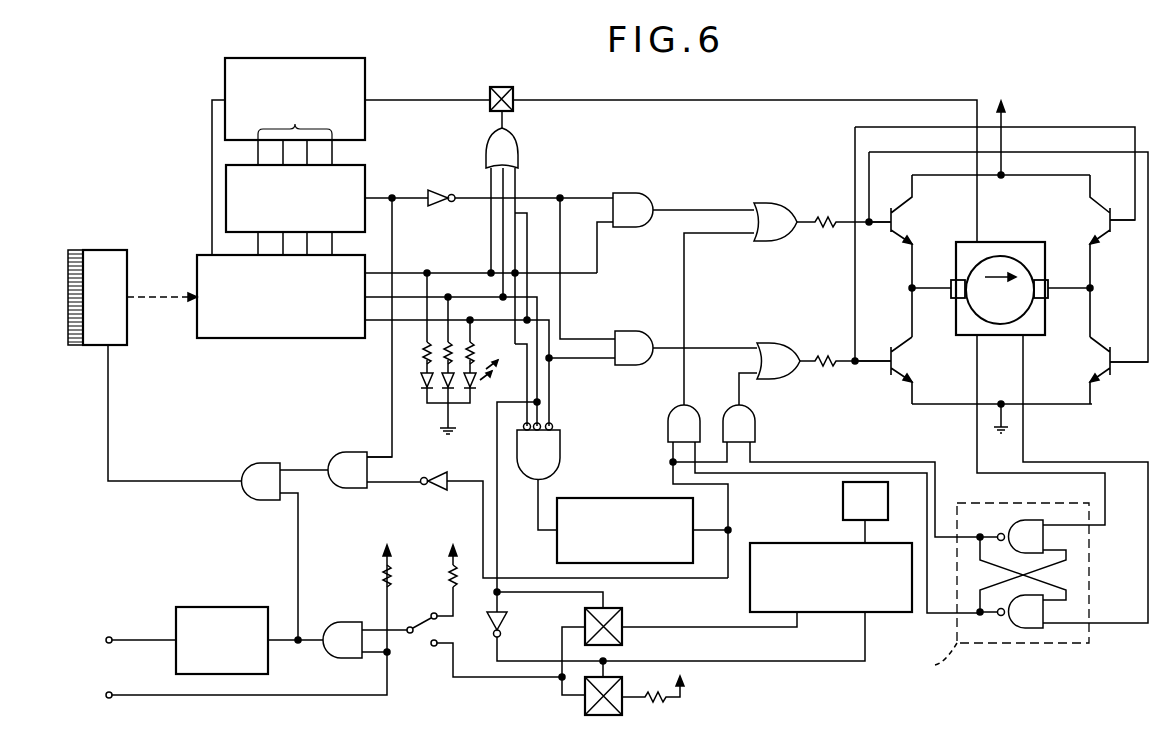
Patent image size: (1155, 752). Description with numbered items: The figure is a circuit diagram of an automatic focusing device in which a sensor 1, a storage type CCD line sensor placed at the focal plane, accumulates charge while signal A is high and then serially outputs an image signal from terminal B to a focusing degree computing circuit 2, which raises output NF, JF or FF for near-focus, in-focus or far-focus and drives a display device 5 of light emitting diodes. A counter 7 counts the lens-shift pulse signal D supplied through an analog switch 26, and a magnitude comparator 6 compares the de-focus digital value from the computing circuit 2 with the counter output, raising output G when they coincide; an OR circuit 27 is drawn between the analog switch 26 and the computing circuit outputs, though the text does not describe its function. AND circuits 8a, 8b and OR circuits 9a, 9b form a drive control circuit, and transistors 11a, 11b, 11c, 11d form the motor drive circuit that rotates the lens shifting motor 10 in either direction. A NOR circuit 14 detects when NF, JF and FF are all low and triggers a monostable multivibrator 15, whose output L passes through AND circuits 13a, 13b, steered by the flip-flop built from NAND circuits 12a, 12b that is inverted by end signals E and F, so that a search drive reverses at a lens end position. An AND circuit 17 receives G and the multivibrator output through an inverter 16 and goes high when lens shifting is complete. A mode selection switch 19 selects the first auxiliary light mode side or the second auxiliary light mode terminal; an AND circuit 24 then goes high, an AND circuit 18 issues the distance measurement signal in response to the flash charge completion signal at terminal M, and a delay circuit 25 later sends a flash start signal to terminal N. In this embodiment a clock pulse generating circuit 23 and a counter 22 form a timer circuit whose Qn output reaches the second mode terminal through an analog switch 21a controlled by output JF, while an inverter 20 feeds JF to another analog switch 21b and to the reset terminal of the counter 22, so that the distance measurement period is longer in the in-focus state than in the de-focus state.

The sensor 1 is at (95, 250).
The focusing degree computing circuit 2 is at (197, 258).
The display device 5 is at (476, 372).
The magnitude comparator 6 is at (366, 170).
The counter 7 is at (366, 64).
The AND circuit 8a is at (630, 193).
The AND circuit 8b is at (630, 331).
The OR circuit 9a is at (770, 203).
The OR circuit 9b is at (770, 343).
The lens shifting motor 10 is at (1010, 242).
The transistor 11a is at (900, 220).
The transistor 11b is at (900, 364).
The transistor 11c is at (1106, 220).
The transistor 11d is at (1106, 364).
The NAND circuit 12a is at (1020, 520).
The NAND circuit 12b is at (1038, 628).
The AND circuit 13a is at (667, 431).
The AND circuit 13b is at (758, 428).
The NOR circuit 14 is at (562, 447).
The monostable multivibrator 15 is at (625, 498).
The inverter 16 is at (440, 190).
The AND circuit 17 is at (345, 452).
The AND circuit 18 is at (262, 463).
The mode selection switch 19 is at (422, 642).
The inverter 20 is at (506, 624).
The analog switch 21a is at (628, 608).
The analog switch 21b is at (585, 706).
The counter 22 is at (790, 543).
The clock pulse generating circuit 23 is at (843, 502).
The AND circuit 24 is at (340, 622).
The delay circuit 25 is at (222, 607).
The analog switch 26 is at (508, 87).
The OR gate 27 is at (520, 143).